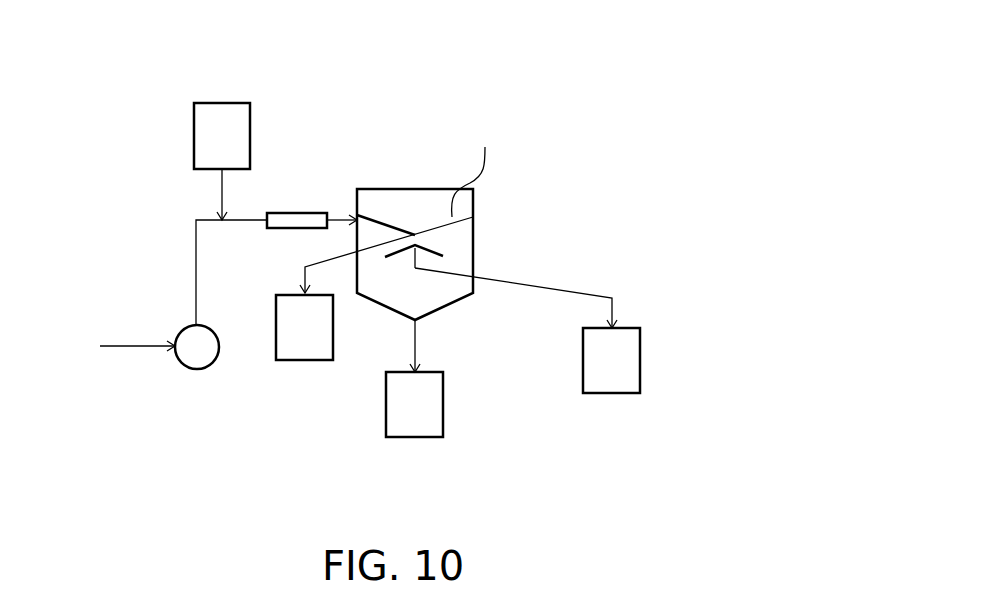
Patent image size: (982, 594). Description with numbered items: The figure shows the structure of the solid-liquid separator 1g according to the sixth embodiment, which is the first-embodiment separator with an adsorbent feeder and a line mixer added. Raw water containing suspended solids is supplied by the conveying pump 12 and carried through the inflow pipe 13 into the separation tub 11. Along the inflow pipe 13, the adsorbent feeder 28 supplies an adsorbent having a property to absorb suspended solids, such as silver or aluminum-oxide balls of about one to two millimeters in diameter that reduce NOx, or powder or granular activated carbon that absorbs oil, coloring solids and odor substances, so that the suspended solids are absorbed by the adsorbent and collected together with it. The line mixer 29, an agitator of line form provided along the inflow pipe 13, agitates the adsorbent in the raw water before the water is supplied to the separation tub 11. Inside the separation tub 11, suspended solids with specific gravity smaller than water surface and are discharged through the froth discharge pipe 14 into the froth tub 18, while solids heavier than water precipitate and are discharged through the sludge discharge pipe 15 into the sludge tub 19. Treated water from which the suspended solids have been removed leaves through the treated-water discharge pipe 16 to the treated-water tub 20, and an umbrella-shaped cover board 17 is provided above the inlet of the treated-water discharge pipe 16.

The solid-liquid separator 1g is at (577, 80).
The separation tub 11 is at (473, 200).
The conveying pump 12 is at (197, 370).
The inflow pipe 13 is at (237, 223).
The froth discharge pipe 14 is at (333, 258).
The sludge discharge pipe 15 is at (416, 342).
The treated-water discharge pipe 16 is at (597, 293).
The cover board 17 is at (434, 257).
The froth tub 18 is at (305, 361).
The sludge tub 19 is at (415, 438).
The treated-water tub 20 is at (612, 394).
The adsorbent feeder 28 is at (224, 103).
The line mixer 29 is at (300, 212).